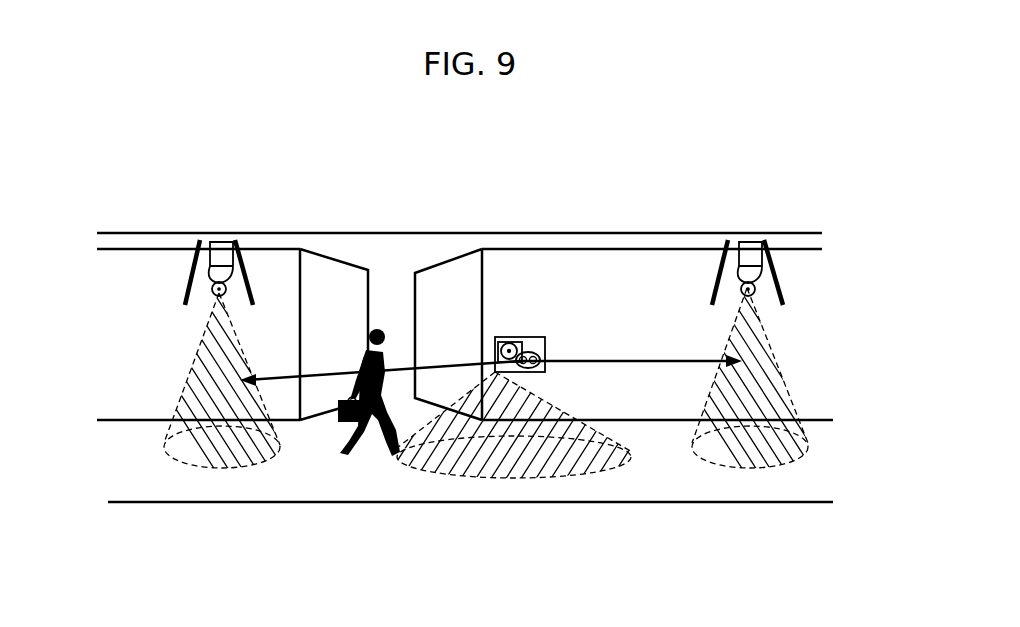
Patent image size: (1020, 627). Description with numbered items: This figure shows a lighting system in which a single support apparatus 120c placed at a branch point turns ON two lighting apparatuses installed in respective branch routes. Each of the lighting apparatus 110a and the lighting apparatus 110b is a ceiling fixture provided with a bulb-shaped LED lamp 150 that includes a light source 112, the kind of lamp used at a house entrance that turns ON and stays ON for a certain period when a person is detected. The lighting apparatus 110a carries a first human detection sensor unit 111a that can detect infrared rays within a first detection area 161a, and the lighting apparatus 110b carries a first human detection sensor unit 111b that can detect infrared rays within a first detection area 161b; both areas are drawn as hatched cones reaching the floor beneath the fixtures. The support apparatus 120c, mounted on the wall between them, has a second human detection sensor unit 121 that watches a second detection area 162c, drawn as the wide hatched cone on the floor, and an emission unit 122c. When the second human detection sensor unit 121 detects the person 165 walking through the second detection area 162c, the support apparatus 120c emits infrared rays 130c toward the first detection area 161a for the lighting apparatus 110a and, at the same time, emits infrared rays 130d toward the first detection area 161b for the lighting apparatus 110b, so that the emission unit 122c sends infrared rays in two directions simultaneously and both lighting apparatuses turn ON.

The bulb-shaped LED lamp 150 is at (509, 230).
The light source 112 is at (221, 250).
The lighting apparatus 110a is at (796, 278).
The lighting apparatus 110b is at (162, 286).
The first human detection sensor unit 111a is at (757, 284).
The first human detection sensor unit 111b is at (212, 293).
The first detection area 161a is at (783, 388).
The first detection area 161b is at (177, 452).
The second detection area 162c is at (563, 467).
The person 165 is at (363, 357).
The support apparatus 120c is at (560, 322).
The second human detection sensor unit 121 is at (502, 345).
The emission unit 122c is at (540, 358).
The infrared rays 130c is at (640, 364).
The infrared rays 130d is at (448, 363).